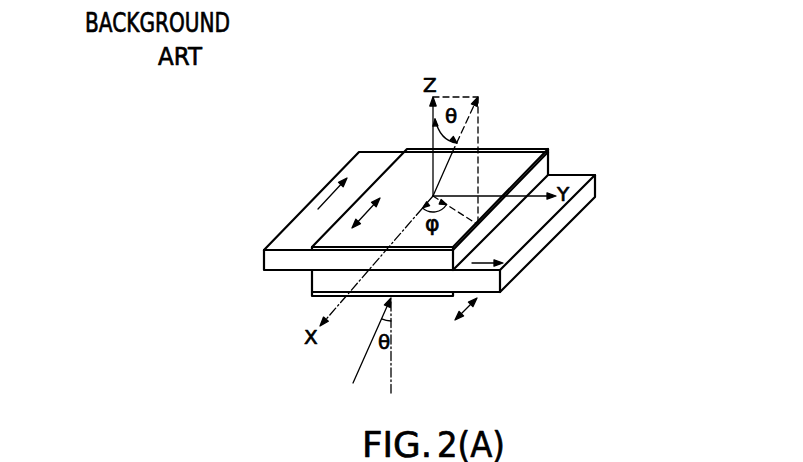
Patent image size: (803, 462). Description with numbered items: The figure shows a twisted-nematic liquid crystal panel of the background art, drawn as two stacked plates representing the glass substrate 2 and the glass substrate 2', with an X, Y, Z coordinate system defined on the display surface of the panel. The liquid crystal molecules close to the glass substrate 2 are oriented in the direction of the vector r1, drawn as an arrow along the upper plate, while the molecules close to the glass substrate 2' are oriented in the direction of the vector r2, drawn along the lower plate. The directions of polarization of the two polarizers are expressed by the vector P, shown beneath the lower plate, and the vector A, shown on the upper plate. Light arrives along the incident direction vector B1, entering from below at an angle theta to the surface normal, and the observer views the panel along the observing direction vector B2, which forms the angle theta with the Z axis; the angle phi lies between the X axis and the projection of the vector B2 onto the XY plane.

The glass substrate 2 is at (383, 209).
The glass substrate 2' is at (470, 235).
The incident direction vector B1 is at (364, 340).
The observing direction vector B2 is at (462, 132).
The orientation vector r1 is at (315, 165).
The orientation vector r2 is at (516, 230).
The polarization direction vector A is at (366, 215).
The polarization direction vector P is at (469, 314).